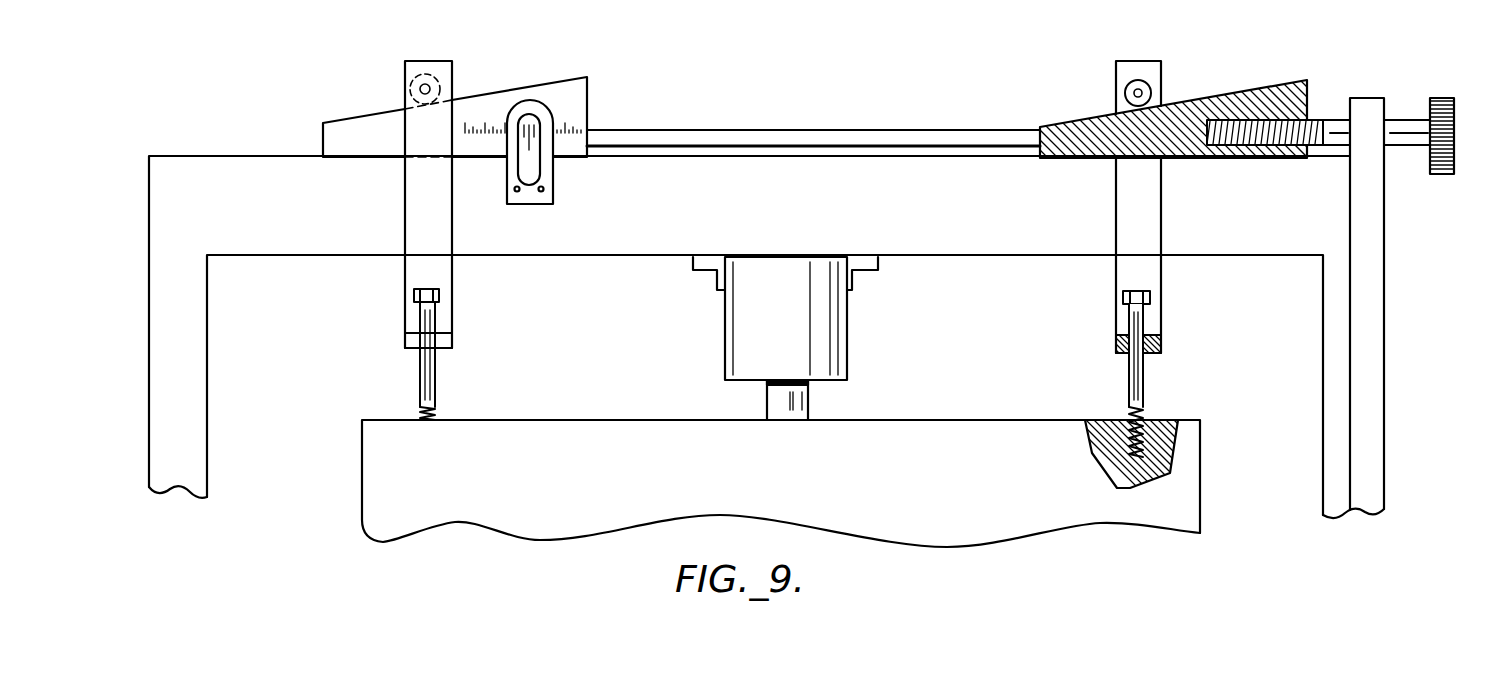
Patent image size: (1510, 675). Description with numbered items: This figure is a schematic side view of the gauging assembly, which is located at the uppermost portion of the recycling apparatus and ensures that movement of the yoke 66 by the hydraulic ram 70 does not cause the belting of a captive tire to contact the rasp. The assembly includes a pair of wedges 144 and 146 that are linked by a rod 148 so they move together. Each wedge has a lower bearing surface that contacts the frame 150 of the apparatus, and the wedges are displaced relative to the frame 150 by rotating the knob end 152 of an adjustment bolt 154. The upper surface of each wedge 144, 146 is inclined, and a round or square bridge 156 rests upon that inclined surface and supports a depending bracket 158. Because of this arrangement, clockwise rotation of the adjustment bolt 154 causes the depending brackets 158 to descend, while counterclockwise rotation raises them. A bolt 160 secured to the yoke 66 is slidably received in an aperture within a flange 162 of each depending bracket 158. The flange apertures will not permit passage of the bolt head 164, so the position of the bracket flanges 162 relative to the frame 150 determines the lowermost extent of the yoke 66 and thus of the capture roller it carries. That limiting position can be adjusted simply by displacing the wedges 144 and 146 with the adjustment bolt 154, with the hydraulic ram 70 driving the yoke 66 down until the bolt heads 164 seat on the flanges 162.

The yoke 66 is at (383, 471).
The hydraulic ram 70 is at (745, 327).
The wedge 144 is at (1255, 88).
The wedge 146 is at (533, 91).
The rod 148 is at (780, 137).
The frame 150 is at (1366, 295).
The knob end 152 is at (1445, 165).
The adjustment bolt 154 is at (1395, 115).
The bridge 156 is at (428, 74).
The depending bracket 158 is at (443, 278).
The bolt 160 is at (425, 382).
The flange 162 is at (412, 339).
The bolt head 164 is at (415, 294).